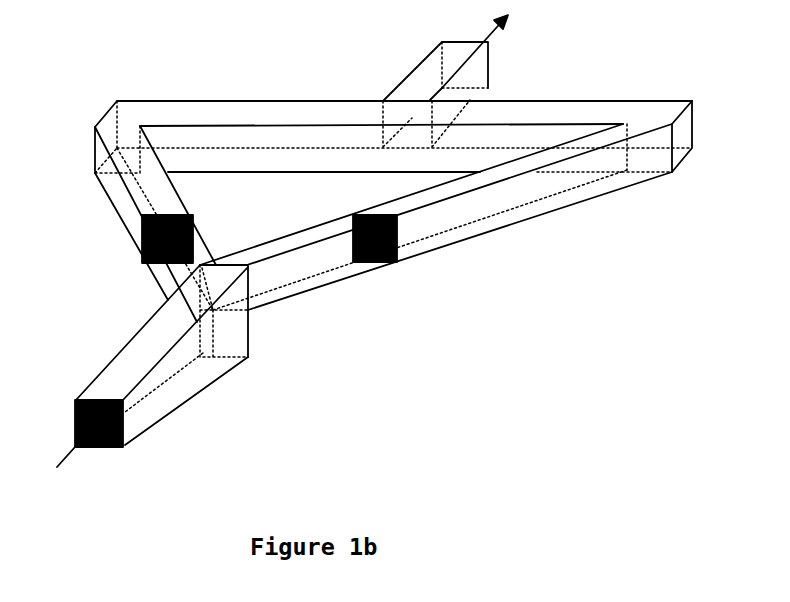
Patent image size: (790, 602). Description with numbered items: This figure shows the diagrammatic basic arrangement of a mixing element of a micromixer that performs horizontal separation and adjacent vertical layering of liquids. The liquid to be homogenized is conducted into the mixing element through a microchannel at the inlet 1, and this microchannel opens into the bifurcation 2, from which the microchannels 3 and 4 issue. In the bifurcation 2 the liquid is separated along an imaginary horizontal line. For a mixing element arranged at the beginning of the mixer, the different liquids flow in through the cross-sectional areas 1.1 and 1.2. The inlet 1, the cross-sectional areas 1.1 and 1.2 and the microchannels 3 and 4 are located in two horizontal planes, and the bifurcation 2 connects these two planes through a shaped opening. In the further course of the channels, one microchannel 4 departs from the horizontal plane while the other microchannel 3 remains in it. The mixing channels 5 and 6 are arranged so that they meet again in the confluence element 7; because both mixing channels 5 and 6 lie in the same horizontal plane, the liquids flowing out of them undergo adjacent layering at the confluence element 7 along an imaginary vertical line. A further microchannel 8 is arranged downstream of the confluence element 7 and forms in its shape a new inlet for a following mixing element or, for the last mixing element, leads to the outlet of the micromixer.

The inlet 1 is at (125, 443).
The cross-sectional area 1.1 is at (142, 263).
The cross-sectional area 1.2 is at (387, 262).
The bifurcation 2 is at (240, 328).
The microchannel 3 is at (493, 175).
The microchannel 4 is at (150, 193).
The mixing channel 5 is at (287, 100).
The mixing channel 6 is at (603, 110).
The confluence element 7 is at (405, 117).
The microchannel 8 is at (462, 53).